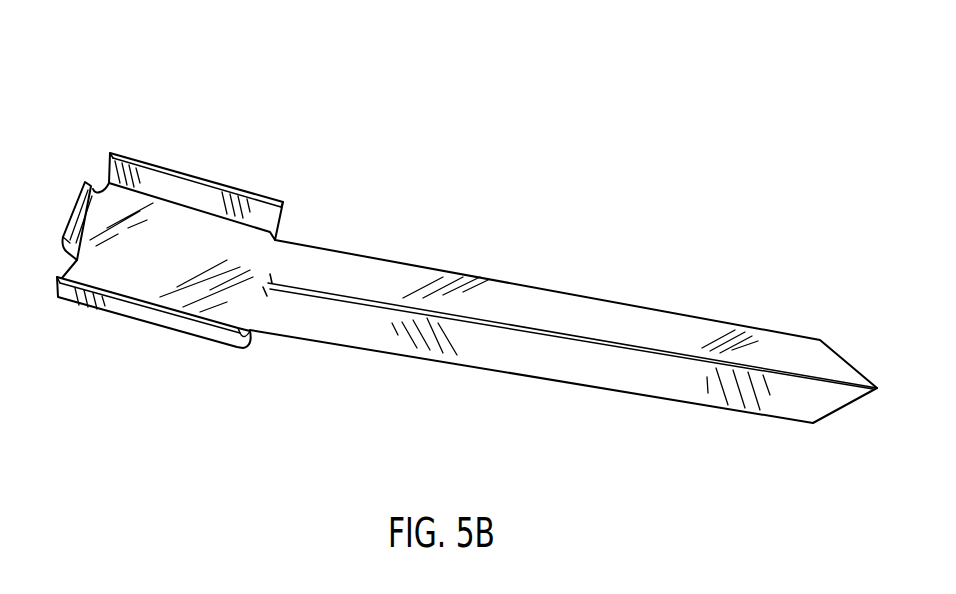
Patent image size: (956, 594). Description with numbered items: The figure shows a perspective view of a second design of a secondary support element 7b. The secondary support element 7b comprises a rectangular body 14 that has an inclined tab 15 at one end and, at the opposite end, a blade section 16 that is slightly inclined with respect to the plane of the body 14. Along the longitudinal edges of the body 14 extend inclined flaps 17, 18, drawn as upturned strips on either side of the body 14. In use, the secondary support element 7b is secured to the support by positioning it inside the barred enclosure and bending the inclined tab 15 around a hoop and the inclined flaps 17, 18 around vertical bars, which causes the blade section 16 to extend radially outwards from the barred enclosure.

The secondary support element 7b is at (90, 146).
The rectangular body 14 is at (208, 235).
The inclined tab 15 is at (68, 212).
The blade section 16 is at (545, 318).
The inclined flap 17 is at (157, 175).
The inclined flap 18 is at (143, 308).